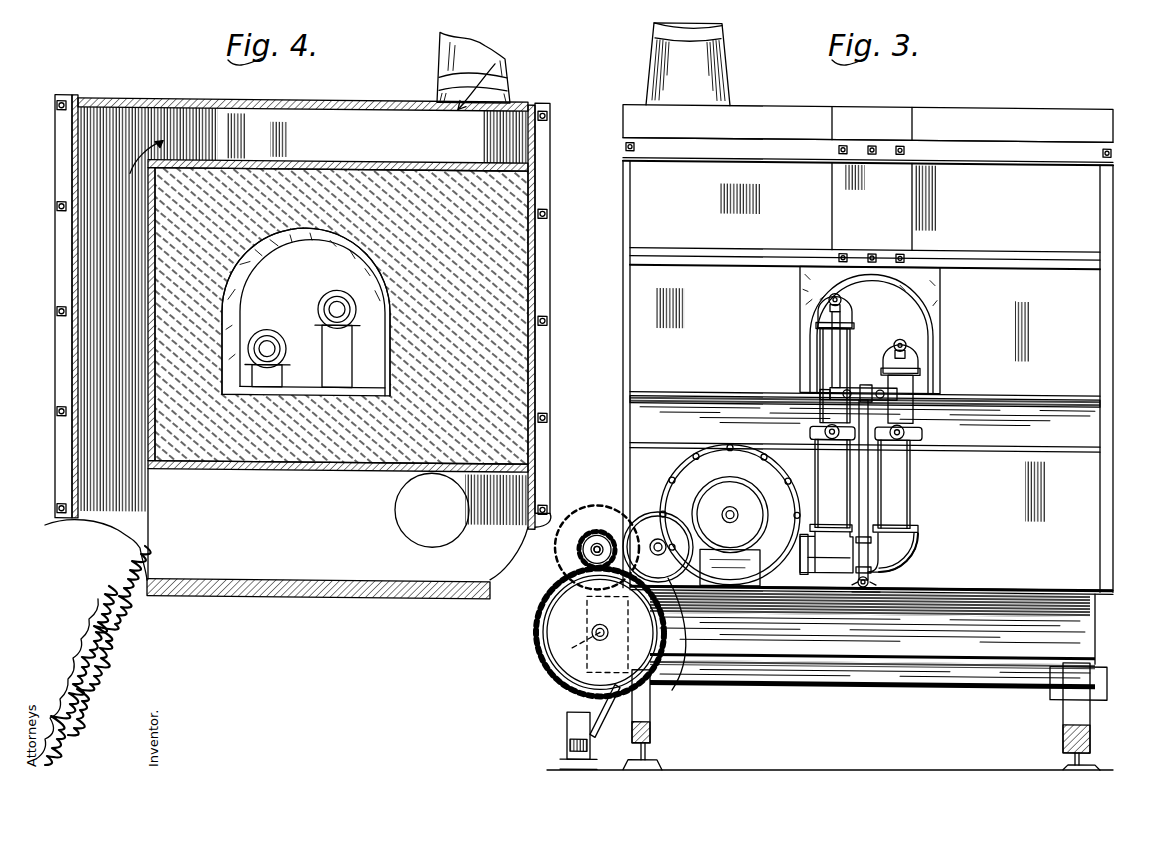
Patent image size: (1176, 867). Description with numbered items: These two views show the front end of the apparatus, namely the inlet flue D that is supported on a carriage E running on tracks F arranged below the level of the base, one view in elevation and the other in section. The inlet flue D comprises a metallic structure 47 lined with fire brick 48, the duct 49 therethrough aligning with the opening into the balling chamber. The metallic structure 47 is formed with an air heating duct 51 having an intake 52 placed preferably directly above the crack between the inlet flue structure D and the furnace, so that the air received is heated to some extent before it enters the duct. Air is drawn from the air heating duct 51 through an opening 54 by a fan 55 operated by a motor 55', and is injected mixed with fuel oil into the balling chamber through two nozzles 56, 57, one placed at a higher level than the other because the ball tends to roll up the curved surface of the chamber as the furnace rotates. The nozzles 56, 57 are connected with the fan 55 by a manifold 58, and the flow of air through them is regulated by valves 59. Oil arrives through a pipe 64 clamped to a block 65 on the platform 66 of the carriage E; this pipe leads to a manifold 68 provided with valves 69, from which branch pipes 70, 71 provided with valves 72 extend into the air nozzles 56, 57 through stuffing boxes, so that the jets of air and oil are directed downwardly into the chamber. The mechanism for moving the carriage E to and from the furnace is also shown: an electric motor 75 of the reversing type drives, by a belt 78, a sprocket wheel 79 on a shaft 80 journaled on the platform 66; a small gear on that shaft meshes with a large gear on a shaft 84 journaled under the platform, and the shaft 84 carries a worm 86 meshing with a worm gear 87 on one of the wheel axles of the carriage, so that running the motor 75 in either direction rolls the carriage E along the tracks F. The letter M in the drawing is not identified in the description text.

In FIG. 4, the metallic structure 47 is at (303, 328).
In FIG. 3, the metallic structure 47 is at (1072, 214).
In FIG. 4, the fire brick 48 is at (410, 232).
In FIG. 4, the duct 49 is at (360, 272).
In FIG. 3, the duct 49 is at (935, 303).
In FIG. 4, the air heating duct 51 is at (130, 175).
In FIG. 4, the intake 52 is at (500, 48).
In FIG. 3, the intake 52 is at (726, 44).
In FIG. 4, the opening 54 is at (399, 514).
In FIG. 3, the fan 55 is at (695, 514).
In FIG. 3, the motor 55' is at (679, 513).
In FIG. 4, the nozzle 56 is at (325, 330).
In FIG. 3, the nozzle 56 is at (848, 340).
In FIG. 4, the nozzle 57 is at (278, 366).
In FIG. 3, the nozzle 57 is at (915, 385).
In FIG. 3, the manifold 58 is at (915, 555).
In FIG. 3, the valves 59 is at (808, 433).
In FIG. 3, the pipe 64 is at (858, 588).
In FIG. 3, the block 65 is at (872, 581).
In FIG. 4, the platform 66 is at (327, 593).
In FIG. 3, the platform 66 is at (1075, 589).
In FIG. 3, the manifold 68 is at (866, 398).
In FIG. 3, the valves 69 is at (828, 380).
In FIG. 3, the branch pipe 70 is at (845, 355).
In FIG. 3, the branch pipe 71 is at (920, 360).
In FIG. 3, the valves 72 is at (841, 300).
In FIG. 3, the electric motor 75 is at (658, 617).
In FIG. 3, the belt 78 is at (597, 539).
In FIG. 3, the sprocket wheel 79 is at (587, 533).
In FIG. 3, the shaft 80 is at (590, 552).
In FIG. 3, the shaft 84 is at (592, 635).
In FIG. 3, the worm 86 is at (565, 662).
In FIG. 3, the worm gear 87 is at (590, 702).
In FIG. 4, the inlet flue D is at (560, 248).
In FIG. 3, the inlet flue D is at (996, 356).
In FIG. 4, the carriage E is at (415, 599).
In FIG. 3, the carriage E is at (1100, 618).
In FIG. 3, the tracks F is at (1075, 750).
In FIG. 3, the motor M is at (565, 747).